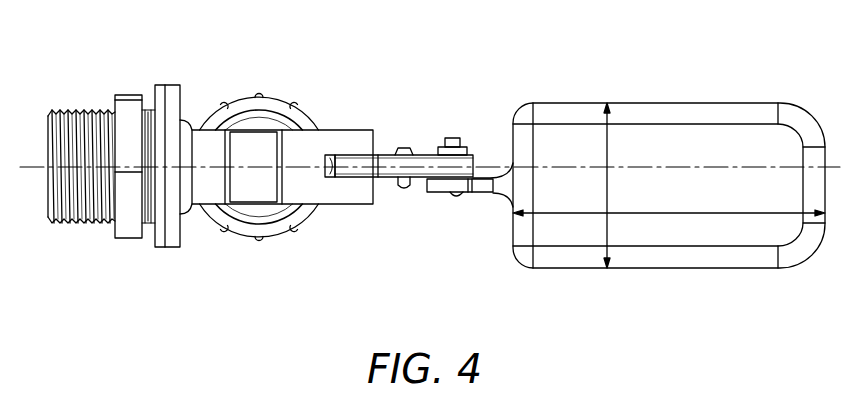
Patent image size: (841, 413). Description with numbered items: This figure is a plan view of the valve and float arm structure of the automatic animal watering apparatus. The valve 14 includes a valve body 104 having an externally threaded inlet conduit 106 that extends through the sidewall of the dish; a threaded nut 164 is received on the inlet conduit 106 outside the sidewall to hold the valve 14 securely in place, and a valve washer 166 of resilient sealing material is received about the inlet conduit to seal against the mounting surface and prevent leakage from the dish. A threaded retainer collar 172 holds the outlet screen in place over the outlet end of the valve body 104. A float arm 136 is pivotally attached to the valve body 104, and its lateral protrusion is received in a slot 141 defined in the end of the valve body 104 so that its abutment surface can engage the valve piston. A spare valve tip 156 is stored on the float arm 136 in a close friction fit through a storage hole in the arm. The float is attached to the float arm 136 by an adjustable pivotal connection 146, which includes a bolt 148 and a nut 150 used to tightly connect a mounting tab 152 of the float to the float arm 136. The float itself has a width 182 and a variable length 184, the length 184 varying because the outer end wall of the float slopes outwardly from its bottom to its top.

The inlet conduit 106 is at (78, 110).
The threaded nut 164 is at (128, 108).
The valve washer 166 is at (160, 92).
The valve 14 is at (306, 130).
The valve body 104 is at (337, 130).
The threaded retainer collar 172 is at (243, 230).
The float arm 136 is at (385, 177).
The slot 141 is at (343, 172).
The spare valve tip 156 is at (403, 147).
The adjustable pivotal connection 146 is at (481, 176).
The nut 150 is at (467, 150).
The bolt 148 is at (458, 197).
The mounting tab 152 is at (486, 197).
The width 182 is at (607, 160).
The length 184 is at (660, 213).